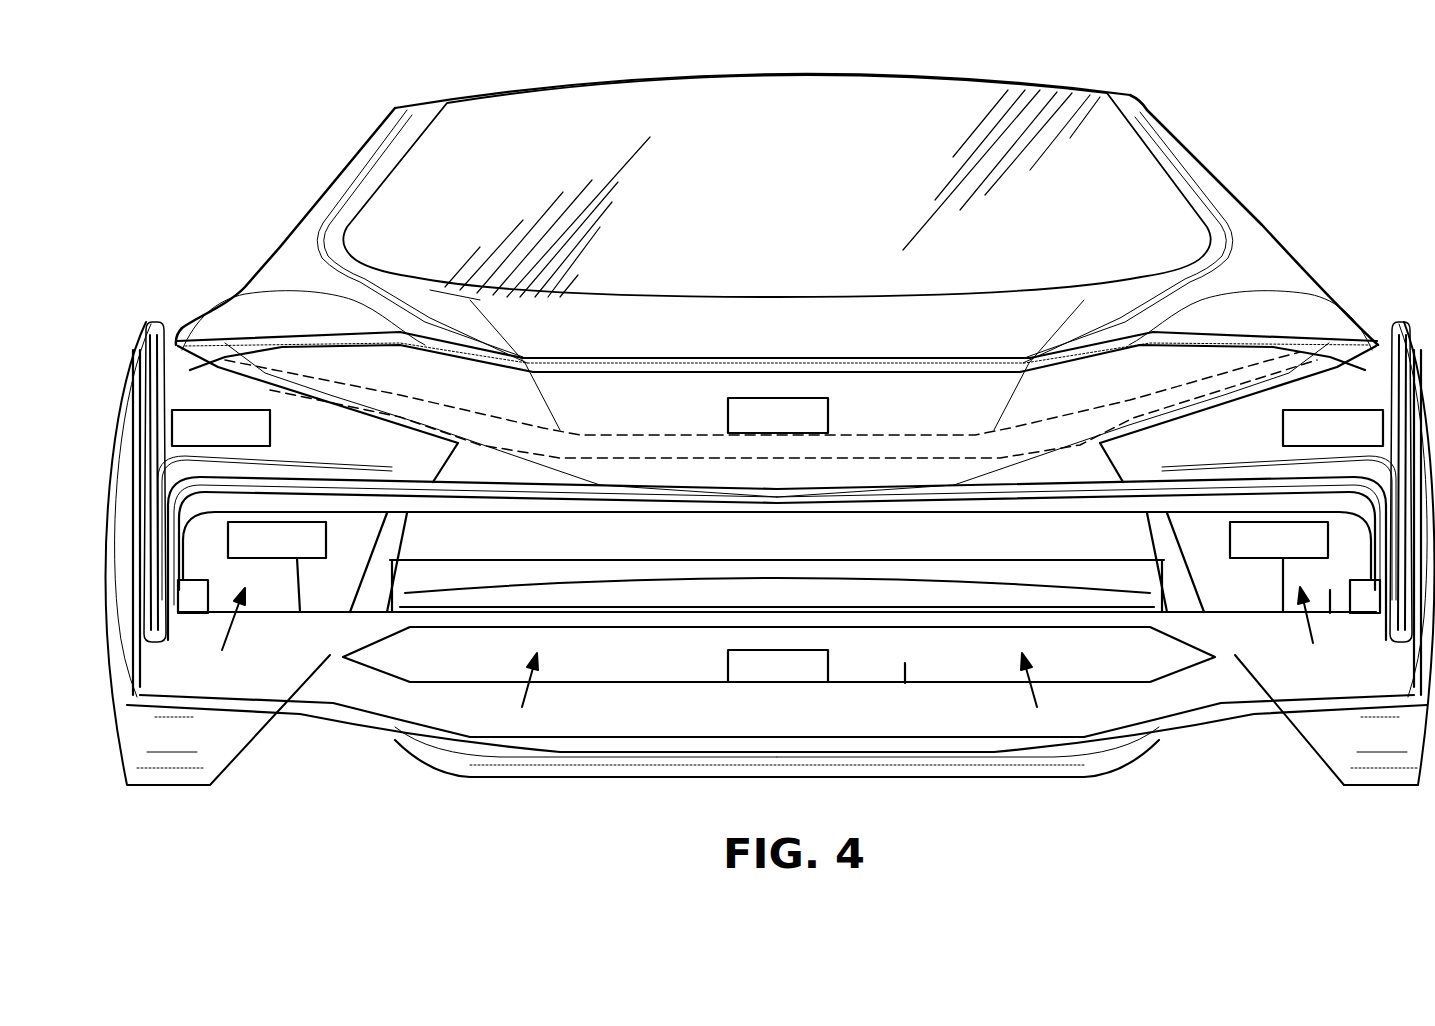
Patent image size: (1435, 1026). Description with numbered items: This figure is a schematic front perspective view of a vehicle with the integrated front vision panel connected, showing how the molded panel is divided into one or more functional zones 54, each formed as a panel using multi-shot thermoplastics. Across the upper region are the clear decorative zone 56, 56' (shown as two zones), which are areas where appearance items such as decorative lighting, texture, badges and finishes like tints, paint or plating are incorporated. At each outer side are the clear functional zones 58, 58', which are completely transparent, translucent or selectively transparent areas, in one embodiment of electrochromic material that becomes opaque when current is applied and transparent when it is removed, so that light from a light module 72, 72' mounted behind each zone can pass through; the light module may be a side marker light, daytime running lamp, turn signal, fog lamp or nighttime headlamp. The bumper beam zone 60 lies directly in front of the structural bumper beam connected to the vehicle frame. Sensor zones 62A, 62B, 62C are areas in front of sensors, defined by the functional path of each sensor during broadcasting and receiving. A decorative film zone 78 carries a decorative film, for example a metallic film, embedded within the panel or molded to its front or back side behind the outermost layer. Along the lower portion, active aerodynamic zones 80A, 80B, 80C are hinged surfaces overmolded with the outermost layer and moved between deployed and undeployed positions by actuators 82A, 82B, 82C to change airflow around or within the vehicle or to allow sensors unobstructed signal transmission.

The functional zones 54 is at (1128, 333).
The clear decorative zone 56 is at (762, 286).
The clear decorative zone 56' is at (777, 396).
The clear functional zone 58 is at (131, 467).
The clear functional zone 58' is at (1390, 444).
The bumper beam zone 60 is at (1142, 573).
The sensor zone 62A is at (300, 612).
The sensor zone 62B is at (788, 398).
The sensor zone 62C is at (1283, 612).
The light module 72 is at (219, 338).
The light module 72' is at (1339, 323).
The decorative film zone 78 is at (320, 380).
The active aerodynamic zone 80A is at (267, 597).
The active aerodynamic zone 80B is at (905, 664).
The active aerodynamic zone 80C is at (1330, 590).
The actuator 82A is at (197, 597).
The actuator 82B is at (730, 663).
The actuator 82C is at (1357, 613).